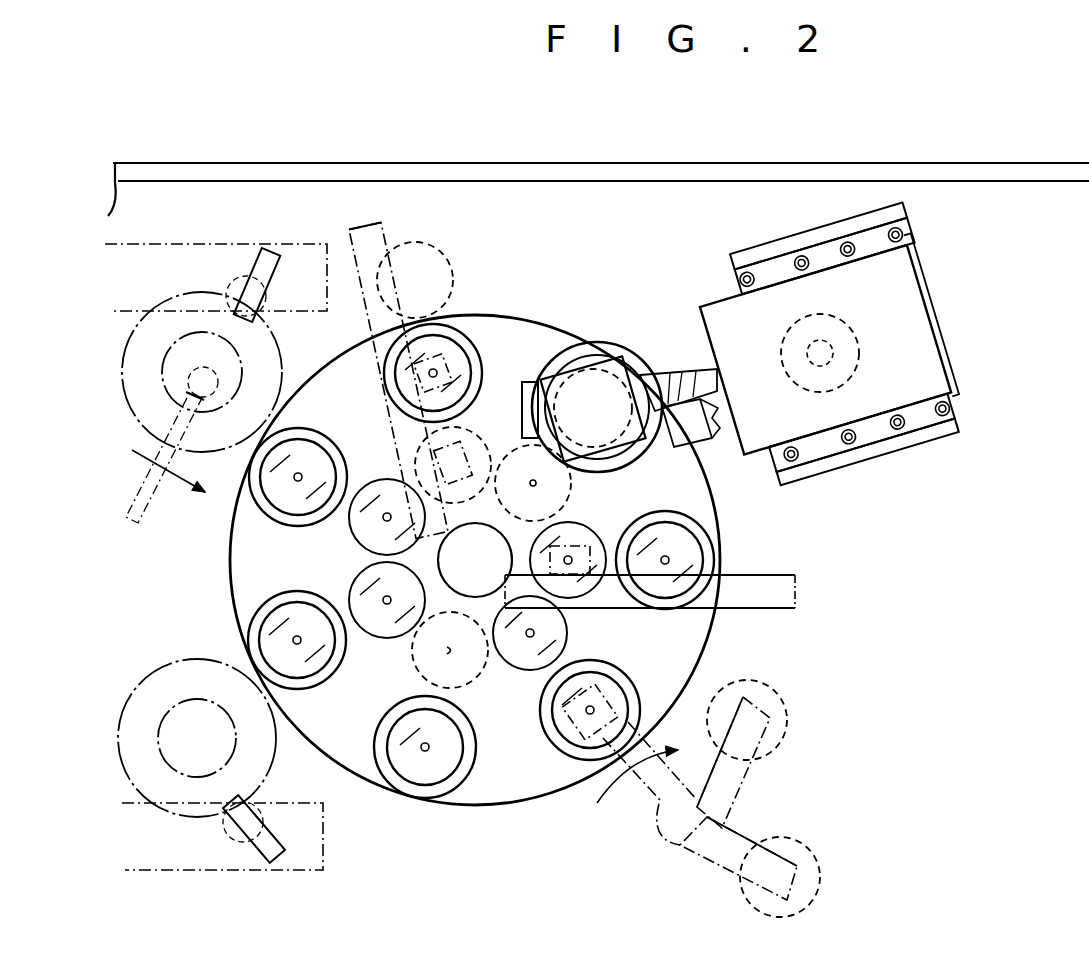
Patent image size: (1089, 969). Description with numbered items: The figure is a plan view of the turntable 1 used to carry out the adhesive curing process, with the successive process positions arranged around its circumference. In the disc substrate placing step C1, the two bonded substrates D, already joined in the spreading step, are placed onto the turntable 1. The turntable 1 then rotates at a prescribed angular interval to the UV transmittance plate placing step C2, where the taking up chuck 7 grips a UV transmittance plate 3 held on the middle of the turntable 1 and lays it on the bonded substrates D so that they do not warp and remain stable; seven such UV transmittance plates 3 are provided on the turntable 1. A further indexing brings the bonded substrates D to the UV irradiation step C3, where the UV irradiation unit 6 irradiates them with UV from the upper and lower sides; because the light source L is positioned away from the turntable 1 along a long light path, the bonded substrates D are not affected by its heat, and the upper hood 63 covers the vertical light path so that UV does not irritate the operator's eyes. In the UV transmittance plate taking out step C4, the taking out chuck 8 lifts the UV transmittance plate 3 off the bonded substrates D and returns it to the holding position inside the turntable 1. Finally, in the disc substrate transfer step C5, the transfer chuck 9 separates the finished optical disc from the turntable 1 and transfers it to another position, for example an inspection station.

The turntable 1 is at (523, 779).
The UV transmittance plate 3 is at (458, 352).
The UV irradiation unit 6 is at (930, 320).
The taking up chuck 7 is at (386, 228).
The taking out chuck 8 is at (795, 603).
The transfer chuck 9 is at (630, 793).
The upper hood 63 is at (590, 345).
The bonded substrates D is at (326, 440).
The light source L is at (822, 353).
The disc substrate placing step C1 is at (220, 497).
The UV transmittance plate placing step C2 is at (472, 297).
The UV irradiation step C3 is at (640, 330).
The UV transmittance plate taking out step C4 is at (742, 538).
The disc substrate transfer step C5 is at (582, 793).